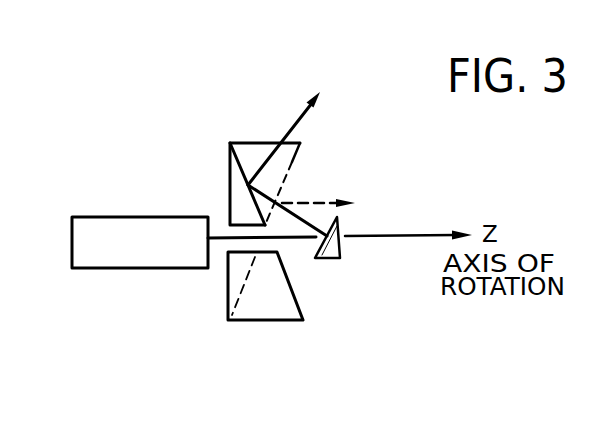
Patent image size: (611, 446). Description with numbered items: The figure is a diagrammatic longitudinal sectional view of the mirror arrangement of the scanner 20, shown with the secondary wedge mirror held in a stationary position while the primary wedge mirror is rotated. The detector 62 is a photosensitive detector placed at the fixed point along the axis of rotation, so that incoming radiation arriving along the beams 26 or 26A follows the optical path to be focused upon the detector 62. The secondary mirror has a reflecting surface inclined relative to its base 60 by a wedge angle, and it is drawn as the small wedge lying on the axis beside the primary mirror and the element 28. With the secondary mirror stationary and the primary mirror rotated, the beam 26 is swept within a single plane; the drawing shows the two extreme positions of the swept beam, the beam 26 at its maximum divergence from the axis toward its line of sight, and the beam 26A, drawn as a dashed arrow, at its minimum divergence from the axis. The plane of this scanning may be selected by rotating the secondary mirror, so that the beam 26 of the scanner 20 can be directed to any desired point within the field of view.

The scanner 20 is at (412, 158).
The beam 26 is at (288, 133).
The beam 26A is at (303, 201).
The prism M1 28 is at (240, 250).
The base 60 is at (338, 245).
The photosensitive detector 62 is at (100, 270).